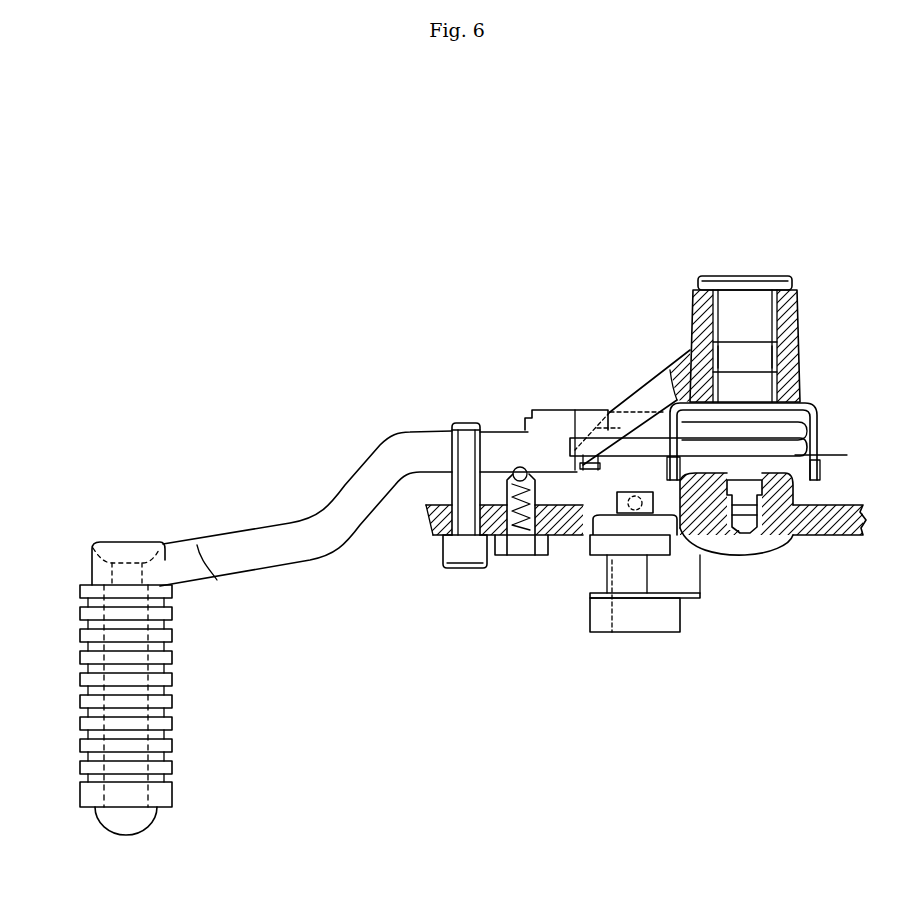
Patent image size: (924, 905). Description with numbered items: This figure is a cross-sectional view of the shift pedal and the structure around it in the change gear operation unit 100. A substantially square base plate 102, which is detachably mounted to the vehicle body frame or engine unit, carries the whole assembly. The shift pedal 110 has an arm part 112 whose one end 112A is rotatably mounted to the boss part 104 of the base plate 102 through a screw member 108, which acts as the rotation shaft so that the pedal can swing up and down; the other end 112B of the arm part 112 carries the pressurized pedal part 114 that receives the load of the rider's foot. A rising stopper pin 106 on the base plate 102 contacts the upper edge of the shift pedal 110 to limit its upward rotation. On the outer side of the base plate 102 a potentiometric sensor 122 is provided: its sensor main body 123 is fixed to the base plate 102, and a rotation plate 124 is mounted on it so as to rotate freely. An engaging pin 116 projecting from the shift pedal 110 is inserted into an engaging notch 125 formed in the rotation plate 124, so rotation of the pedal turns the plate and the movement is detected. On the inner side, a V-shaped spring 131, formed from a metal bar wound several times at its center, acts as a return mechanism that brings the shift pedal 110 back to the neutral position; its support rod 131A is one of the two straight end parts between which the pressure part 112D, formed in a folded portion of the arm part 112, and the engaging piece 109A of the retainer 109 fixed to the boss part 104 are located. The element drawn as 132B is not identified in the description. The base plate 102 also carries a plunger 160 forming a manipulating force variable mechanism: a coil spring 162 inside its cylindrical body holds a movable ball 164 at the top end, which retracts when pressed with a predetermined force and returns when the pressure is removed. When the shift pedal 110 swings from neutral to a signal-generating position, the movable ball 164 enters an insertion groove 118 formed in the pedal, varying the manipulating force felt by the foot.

The change gear operation unit 100 is at (413, 628).
The base plate 102 is at (832, 528).
The boss part 104 is at (781, 556).
The rising stopper pin 106 is at (460, 566).
The screw member 108 is at (747, 274).
The retainer 109 is at (790, 427).
The engaging piece 109A is at (720, 552).
The shift pedal 110 is at (393, 429).
The arm part 112 is at (345, 478).
The end 112A is at (800, 327).
The other end 112B is at (92, 548).
The pressure part 112D is at (612, 412).
The pedal part 114 is at (168, 655).
The engaging pin 116 is at (582, 547).
The insertion groove 118 is at (545, 478).
The potentiometric sensor 122 is at (645, 637).
The sensor main body 123 is at (697, 600).
The rotation plate 124 is at (612, 575).
The engaging notch 125 is at (575, 542).
The V-shaped spring 131 is at (813, 423).
The support rod 131A is at (587, 470).
The link portion 132B is at (655, 398).
The plunger 160 is at (500, 564).
The coil spring 162 is at (520, 557).
The movable ball 164 is at (516, 462).